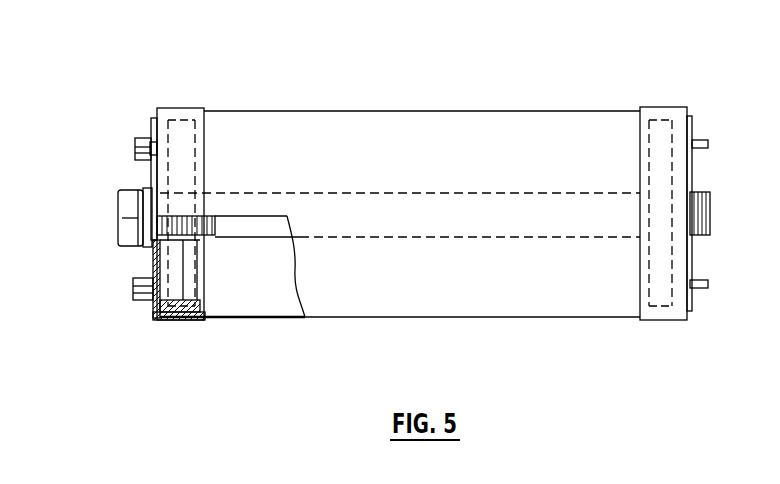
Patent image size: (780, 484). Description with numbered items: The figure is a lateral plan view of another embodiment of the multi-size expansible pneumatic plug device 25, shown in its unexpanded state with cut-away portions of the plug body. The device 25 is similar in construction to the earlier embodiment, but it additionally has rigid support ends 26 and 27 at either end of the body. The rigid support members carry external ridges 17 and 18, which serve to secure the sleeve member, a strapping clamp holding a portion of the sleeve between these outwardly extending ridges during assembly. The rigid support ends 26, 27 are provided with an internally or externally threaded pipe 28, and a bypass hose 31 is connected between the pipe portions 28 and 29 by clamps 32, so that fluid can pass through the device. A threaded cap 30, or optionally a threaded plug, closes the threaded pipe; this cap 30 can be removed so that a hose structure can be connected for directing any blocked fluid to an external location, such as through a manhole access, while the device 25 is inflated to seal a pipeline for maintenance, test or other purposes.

The expansible pneumatic plug device 25 is at (431, 96).
The external ridge 17 is at (168, 122).
The external ridge 18 is at (195, 122).
The rigid support end 27 is at (692, 128).
The pipe portion 29 is at (703, 192).
The threaded cap 30 is at (113, 230).
The bypass hose 31 is at (264, 240).
The clamp 32 is at (187, 240).
The threaded pipe 28 is at (151, 250).
The rigid support end 26 is at (152, 310).